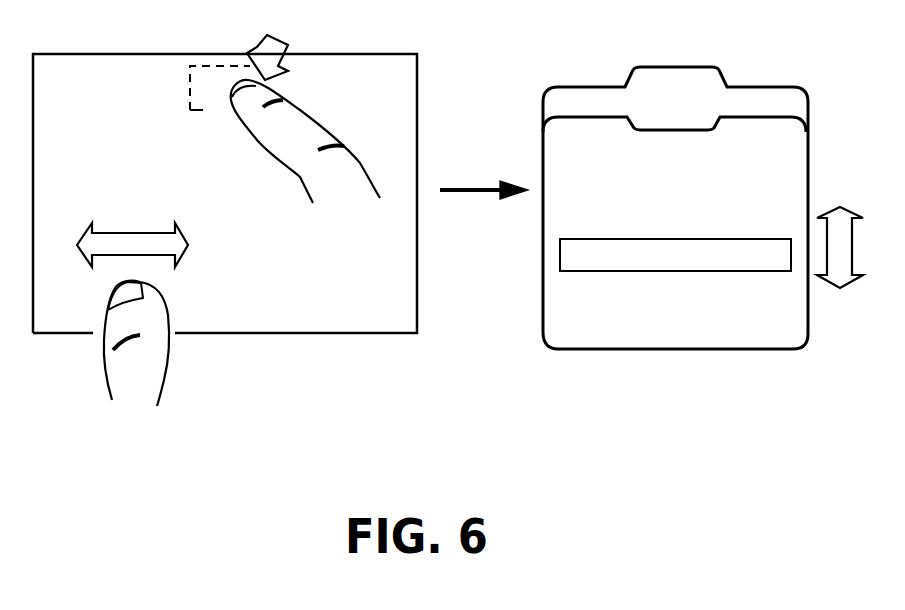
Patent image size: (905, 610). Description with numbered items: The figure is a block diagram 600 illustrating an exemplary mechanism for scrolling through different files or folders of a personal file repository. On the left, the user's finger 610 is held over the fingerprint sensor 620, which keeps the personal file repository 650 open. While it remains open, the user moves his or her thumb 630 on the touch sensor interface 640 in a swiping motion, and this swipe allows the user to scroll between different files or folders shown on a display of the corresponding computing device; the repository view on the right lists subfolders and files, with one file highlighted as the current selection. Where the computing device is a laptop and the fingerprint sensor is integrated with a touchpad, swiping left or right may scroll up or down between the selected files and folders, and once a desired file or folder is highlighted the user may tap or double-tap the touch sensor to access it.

The block diagram 600 is at (588, 496).
The user's finger 610 is at (298, 118).
The fingerprint sensor 620 is at (200, 108).
The thumb 630 is at (160, 320).
The touch sensor interface 640 is at (344, 318).
The personal file repository 650 is at (588, 340).